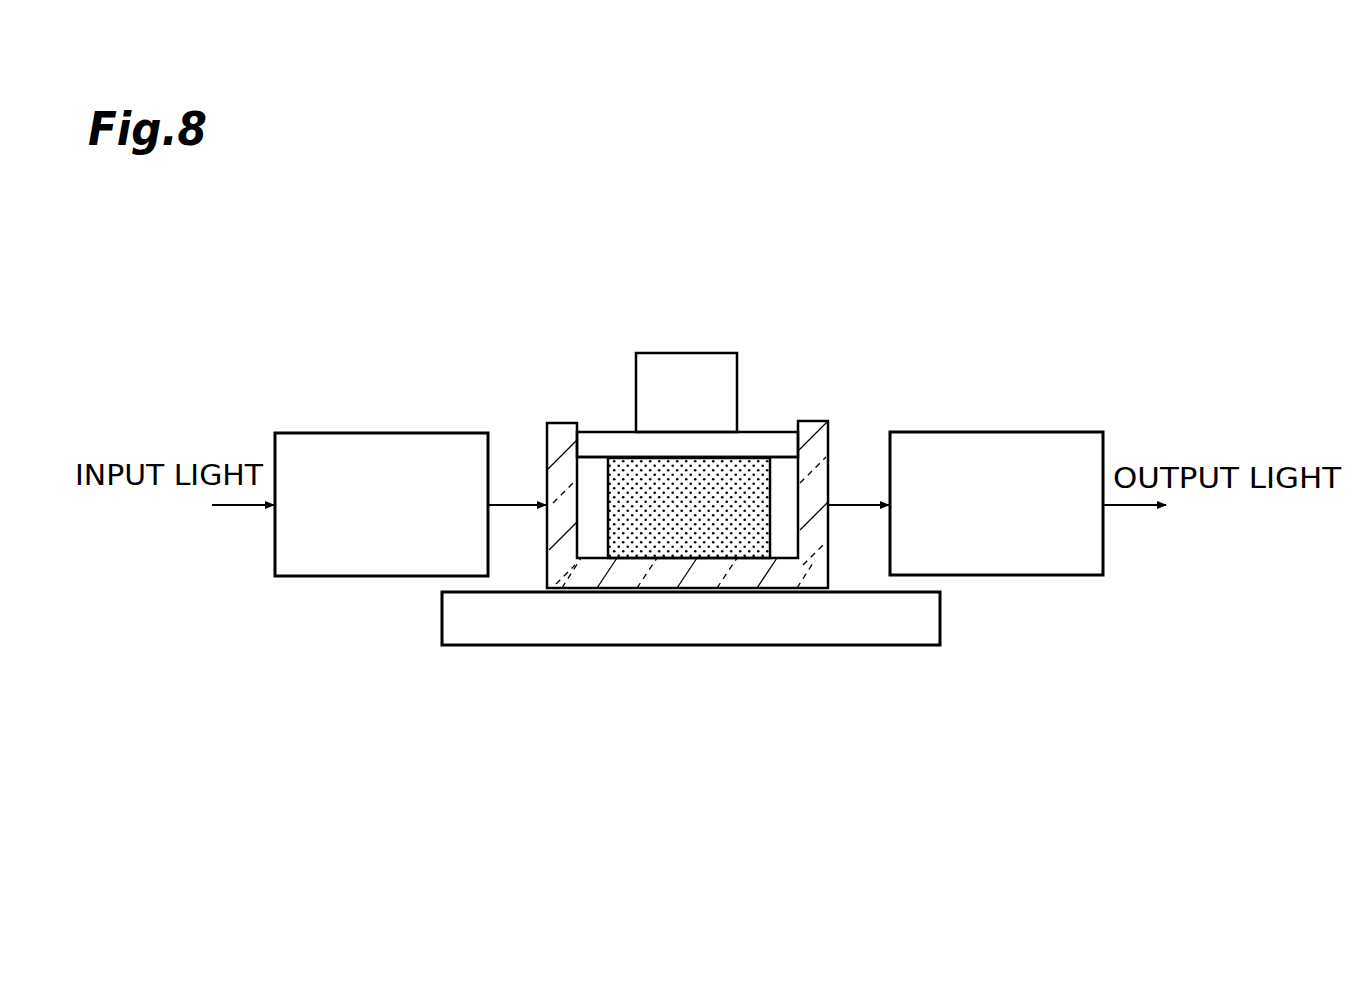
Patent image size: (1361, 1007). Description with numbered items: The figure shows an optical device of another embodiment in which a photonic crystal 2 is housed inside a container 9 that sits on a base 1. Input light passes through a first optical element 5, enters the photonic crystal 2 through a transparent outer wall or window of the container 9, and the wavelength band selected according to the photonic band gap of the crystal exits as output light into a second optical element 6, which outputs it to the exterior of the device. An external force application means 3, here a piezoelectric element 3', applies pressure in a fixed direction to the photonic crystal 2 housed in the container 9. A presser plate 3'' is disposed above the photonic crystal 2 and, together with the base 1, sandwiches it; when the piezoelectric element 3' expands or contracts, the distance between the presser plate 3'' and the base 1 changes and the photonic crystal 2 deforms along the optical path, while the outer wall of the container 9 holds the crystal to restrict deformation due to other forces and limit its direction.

The base 1 is at (810, 645).
The photonic crystal 2 is at (529, 457).
The external force application means 3 is at (581, 398).
The piezoelectric element 3' is at (686, 359).
The presser plate 3'' is at (690, 415).
The first optical element 5 is at (350, 577).
The second optical element 6 is at (1003, 432).
The container 9 is at (829, 431).